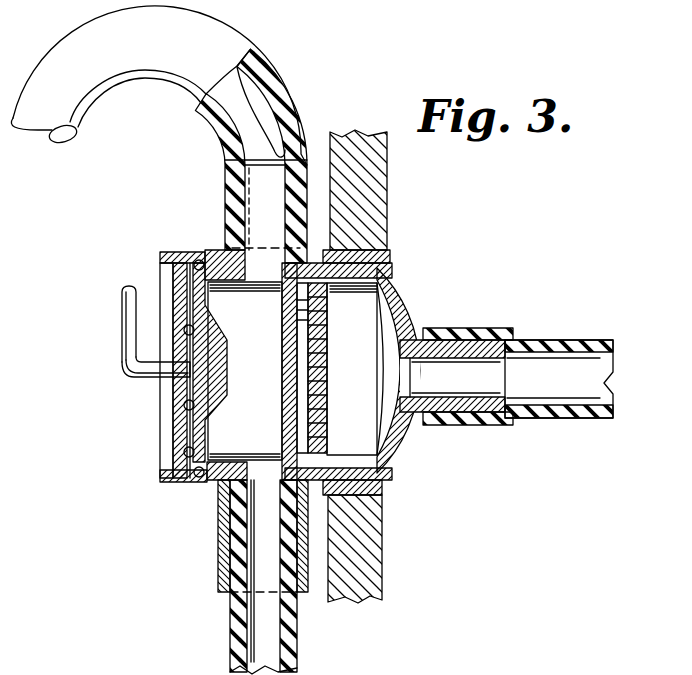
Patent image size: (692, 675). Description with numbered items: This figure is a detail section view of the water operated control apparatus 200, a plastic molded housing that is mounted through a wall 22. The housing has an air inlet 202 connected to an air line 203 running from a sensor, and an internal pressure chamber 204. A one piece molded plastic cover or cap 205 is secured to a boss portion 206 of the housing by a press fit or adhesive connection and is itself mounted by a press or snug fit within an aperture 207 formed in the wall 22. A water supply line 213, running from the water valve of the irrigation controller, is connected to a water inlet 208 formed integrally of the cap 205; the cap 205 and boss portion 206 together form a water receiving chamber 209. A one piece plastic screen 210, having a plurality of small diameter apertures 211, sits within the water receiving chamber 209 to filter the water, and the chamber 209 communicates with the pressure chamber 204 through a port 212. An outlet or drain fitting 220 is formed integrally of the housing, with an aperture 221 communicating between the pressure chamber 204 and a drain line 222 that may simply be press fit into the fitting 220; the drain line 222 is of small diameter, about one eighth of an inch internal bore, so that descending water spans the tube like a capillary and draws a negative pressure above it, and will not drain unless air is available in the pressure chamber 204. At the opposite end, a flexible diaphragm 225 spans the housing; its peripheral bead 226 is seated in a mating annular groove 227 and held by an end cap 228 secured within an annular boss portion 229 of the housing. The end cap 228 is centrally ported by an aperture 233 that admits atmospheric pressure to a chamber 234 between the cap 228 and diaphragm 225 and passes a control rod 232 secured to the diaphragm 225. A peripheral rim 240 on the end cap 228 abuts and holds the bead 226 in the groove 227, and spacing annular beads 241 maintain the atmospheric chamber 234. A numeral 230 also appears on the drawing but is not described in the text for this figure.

The water operated control apparatus 200 is at (157, 489).
The air inlet 202 is at (285, 140).
The air line 203 is at (230, 45).
The internal pressure chamber 204 is at (245, 371).
The cover or cap 205 is at (400, 293).
The boss portion 206 is at (398, 262).
The aperture 207 is at (367, 248).
The water inlet 208 is at (477, 405).
The water receiving chamber 209 is at (357, 450).
The screen 210 is at (327, 415).
The apertures 211 is at (330, 347).
The port 212 is at (287, 393).
The water supply line 213 is at (600, 296).
The outlet or drain fitting 220 is at (222, 535).
The aperture 221 is at (265, 472).
The drain line 222 is at (290, 642).
The wall 22 is at (367, 556).
The flexible diaphragm 225 is at (257, 364).
The peripheral bead 226 is at (203, 483).
The annular groove 227 is at (203, 250).
The end cap 228 is at (163, 300).
The annular boss portion 229 is at (165, 268).
The actuator 230 is at (16, 310).
The control rod 232 is at (128, 332).
The aperture 233 is at (122, 364).
The atmospheric chamber 234 is at (193, 392).
The peripheral rim 240 is at (200, 473).
The spacing annular beads 241 is at (186, 453).